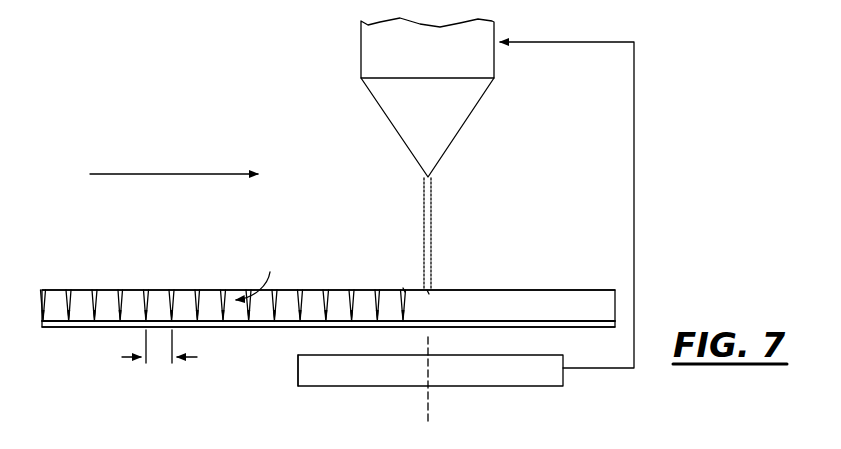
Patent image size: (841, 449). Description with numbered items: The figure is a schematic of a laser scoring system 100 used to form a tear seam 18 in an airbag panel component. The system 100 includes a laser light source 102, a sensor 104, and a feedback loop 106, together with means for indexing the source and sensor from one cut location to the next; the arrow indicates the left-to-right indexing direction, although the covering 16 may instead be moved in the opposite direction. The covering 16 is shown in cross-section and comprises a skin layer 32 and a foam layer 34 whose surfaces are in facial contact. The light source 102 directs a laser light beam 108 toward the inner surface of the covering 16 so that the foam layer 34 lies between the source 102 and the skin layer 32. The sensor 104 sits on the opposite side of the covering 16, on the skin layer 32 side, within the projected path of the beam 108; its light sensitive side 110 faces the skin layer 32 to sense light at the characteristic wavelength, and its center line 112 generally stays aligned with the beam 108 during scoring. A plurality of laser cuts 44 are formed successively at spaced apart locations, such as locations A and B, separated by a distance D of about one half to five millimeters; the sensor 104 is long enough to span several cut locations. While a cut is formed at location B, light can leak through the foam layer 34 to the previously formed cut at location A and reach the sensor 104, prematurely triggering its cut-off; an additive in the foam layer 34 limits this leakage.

The laser scoring system 100 is at (124, 87).
The laser light source 102 is at (458, 94).
The laser light beam 108 is at (427, 200).
The feedback loop 106 is at (634, 153).
The covering 16 is at (547, 298).
The foam layer 34 is at (85, 298).
The skin layer 32 is at (85, 326).
The laser cuts 44 is at (172, 290).
The distance between successive laser cuts D is at (150, 349).
The tear seam 18 is at (261, 275).
The location A is at (405, 290).
The location B is at (429, 293).
The light sensitive side 110 is at (456, 355).
The sensor 104 is at (298, 372).
The center line 112 is at (430, 405).